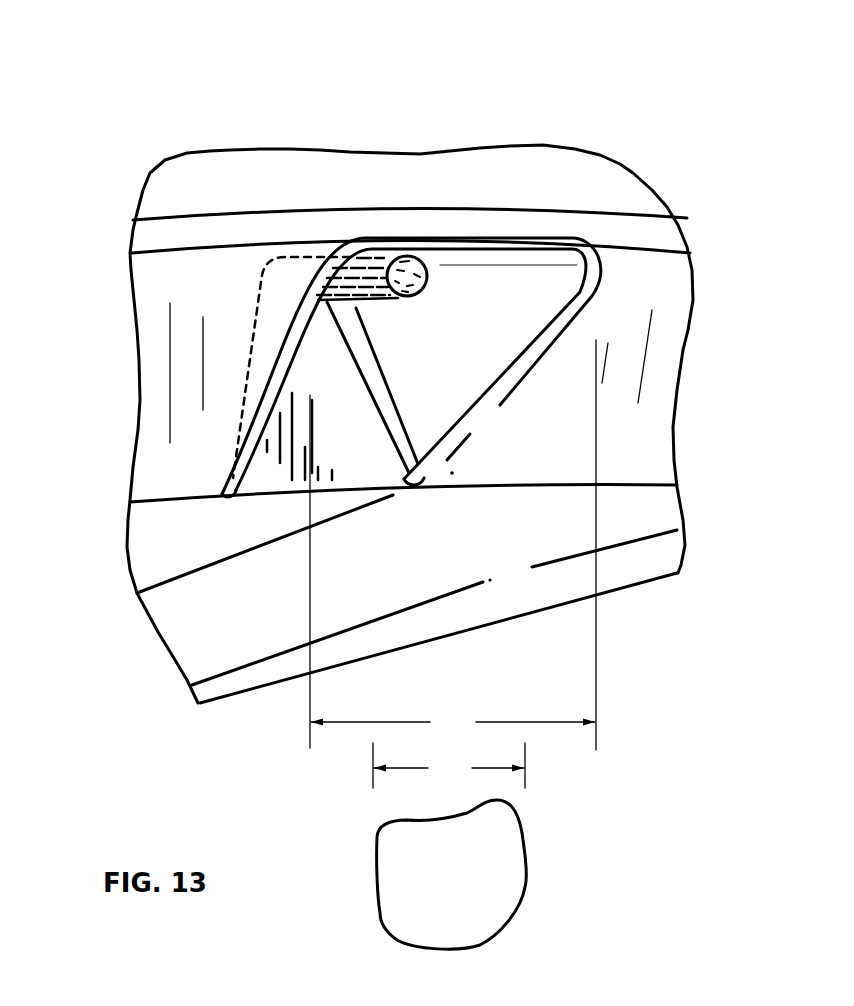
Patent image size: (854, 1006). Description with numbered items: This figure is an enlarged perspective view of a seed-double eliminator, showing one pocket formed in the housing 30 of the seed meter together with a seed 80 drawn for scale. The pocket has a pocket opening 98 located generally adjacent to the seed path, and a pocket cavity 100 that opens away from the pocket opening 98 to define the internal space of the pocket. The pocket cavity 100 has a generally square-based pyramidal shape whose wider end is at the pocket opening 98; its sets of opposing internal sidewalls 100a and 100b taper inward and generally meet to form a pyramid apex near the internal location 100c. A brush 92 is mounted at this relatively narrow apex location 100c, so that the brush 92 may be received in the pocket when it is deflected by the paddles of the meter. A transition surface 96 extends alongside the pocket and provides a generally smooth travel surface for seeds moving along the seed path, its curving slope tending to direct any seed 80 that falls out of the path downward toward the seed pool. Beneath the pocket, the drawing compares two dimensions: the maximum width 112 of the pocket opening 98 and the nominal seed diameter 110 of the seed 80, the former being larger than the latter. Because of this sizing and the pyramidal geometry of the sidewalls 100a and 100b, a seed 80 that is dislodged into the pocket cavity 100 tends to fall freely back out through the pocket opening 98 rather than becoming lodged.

The housing 30 is at (231, 170).
The brush 92 is at (403, 258).
The transition surface 96 is at (183, 340).
The pocket opening 98 is at (585, 295).
The pocket cavity 100 is at (250, 508).
The internal sidewall 100a is at (471, 268).
The internal sidewall 100b is at (312, 343).
The internal location 100c is at (290, 240).
The nominal seed diameter 110 is at (449, 765).
The maximum width 112 is at (453, 545).
The seed 80 is at (517, 857).